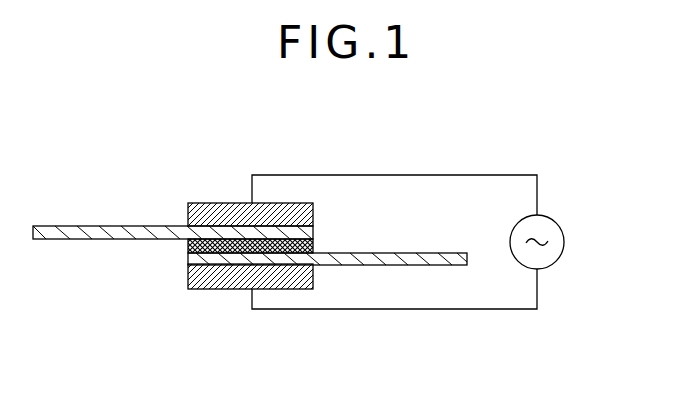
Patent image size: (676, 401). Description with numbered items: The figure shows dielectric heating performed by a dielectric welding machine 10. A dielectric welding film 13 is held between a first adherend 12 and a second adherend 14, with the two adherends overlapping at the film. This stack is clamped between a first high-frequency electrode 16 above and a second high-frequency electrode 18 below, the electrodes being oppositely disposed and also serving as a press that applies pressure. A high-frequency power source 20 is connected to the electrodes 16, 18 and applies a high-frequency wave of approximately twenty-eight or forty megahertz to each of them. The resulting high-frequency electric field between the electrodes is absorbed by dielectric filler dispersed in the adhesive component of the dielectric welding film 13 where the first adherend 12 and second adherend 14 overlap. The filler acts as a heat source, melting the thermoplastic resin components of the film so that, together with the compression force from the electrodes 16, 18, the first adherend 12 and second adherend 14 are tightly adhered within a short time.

The dielectric welding machine 10 is at (582, 128).
The first adherend 12 is at (107, 226).
The dielectric welding film 13 is at (188, 248).
The second adherend 14 is at (415, 265).
The first high-frequency electrode 16 is at (313, 218).
The second high-frequency electrode 18 is at (294, 289).
The high-frequency power source 20 is at (563, 251).